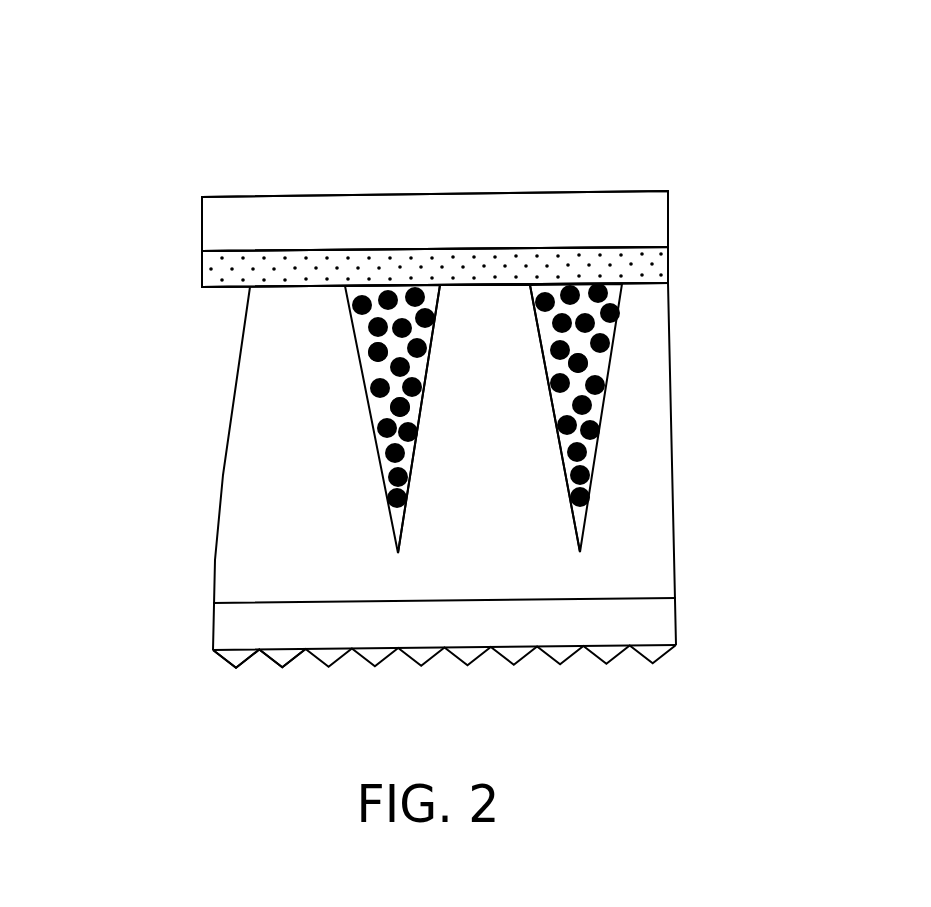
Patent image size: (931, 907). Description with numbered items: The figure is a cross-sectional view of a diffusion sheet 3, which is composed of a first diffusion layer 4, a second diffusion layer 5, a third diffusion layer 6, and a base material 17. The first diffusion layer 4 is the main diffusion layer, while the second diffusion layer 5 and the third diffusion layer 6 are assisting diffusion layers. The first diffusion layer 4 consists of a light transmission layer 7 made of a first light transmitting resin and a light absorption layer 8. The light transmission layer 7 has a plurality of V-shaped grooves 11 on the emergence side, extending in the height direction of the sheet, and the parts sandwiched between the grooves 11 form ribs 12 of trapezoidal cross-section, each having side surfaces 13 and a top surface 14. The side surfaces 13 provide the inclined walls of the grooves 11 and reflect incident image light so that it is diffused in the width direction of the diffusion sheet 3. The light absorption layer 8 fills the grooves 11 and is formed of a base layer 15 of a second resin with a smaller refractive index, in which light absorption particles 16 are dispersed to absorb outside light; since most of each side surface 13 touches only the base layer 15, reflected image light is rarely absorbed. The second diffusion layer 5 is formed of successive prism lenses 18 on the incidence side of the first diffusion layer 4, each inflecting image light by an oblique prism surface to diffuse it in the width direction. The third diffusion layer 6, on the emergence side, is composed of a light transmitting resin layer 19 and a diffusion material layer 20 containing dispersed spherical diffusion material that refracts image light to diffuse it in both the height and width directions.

The diffusion sheet 3 is at (356, 168).
The first diffusion layer 4 is at (212, 472).
The second diffusion layer 5 is at (204, 660).
The third diffusion layer 6 is at (192, 259).
The light transmission layer 7 is at (510, 387).
The light absorption layer 8 is at (582, 347).
The V-shaped groove 11 is at (355, 330).
The rib 12 is at (487, 428).
The side surface 13 is at (413, 460).
The top surface 14 is at (475, 287).
The base layer 15 is at (377, 371).
The light absorption particle 16 is at (390, 410).
The base material 17 is at (565, 620).
The prism lens 18 is at (422, 653).
The light transmitting resin layer 19 is at (320, 217).
The diffusion material layer 20 is at (540, 263).